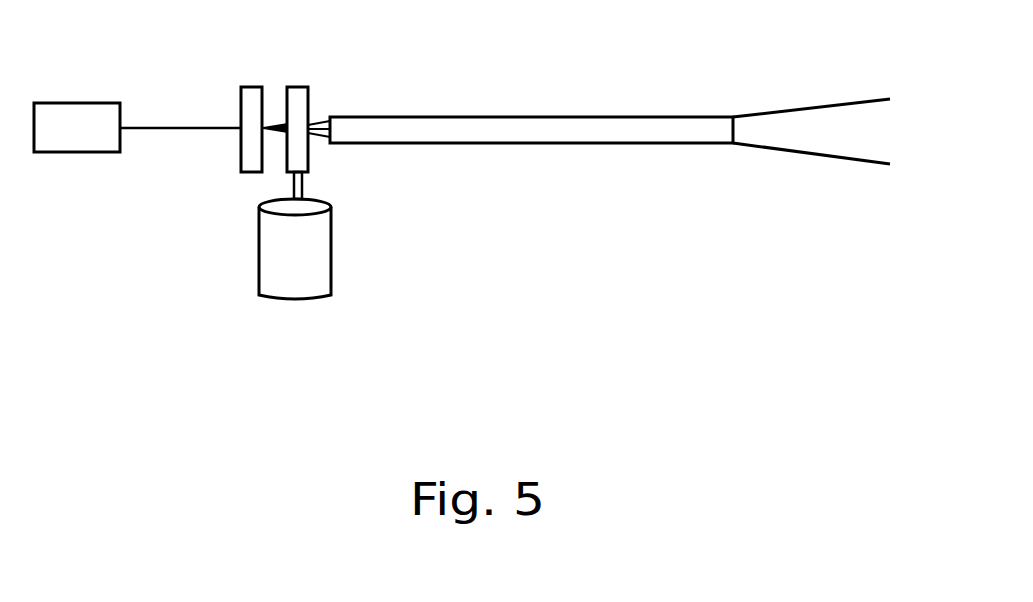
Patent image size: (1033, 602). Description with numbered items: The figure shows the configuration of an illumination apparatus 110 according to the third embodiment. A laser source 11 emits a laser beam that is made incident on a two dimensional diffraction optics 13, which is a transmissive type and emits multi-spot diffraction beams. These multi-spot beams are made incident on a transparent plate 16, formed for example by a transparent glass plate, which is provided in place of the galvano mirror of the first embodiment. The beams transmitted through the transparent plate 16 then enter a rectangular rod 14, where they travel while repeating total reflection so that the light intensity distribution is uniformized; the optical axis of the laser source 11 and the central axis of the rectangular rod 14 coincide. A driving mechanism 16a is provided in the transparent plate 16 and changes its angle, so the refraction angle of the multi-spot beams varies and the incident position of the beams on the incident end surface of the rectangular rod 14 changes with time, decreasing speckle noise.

The laser source 11 is at (75, 143).
The two dimensional diffraction optics 13 is at (249, 153).
The transparent plate 16 is at (304, 157).
The driving mechanism 16a is at (305, 285).
The rectangular rod 14 is at (635, 130).
The illumination apparatus 110 is at (793, 294).